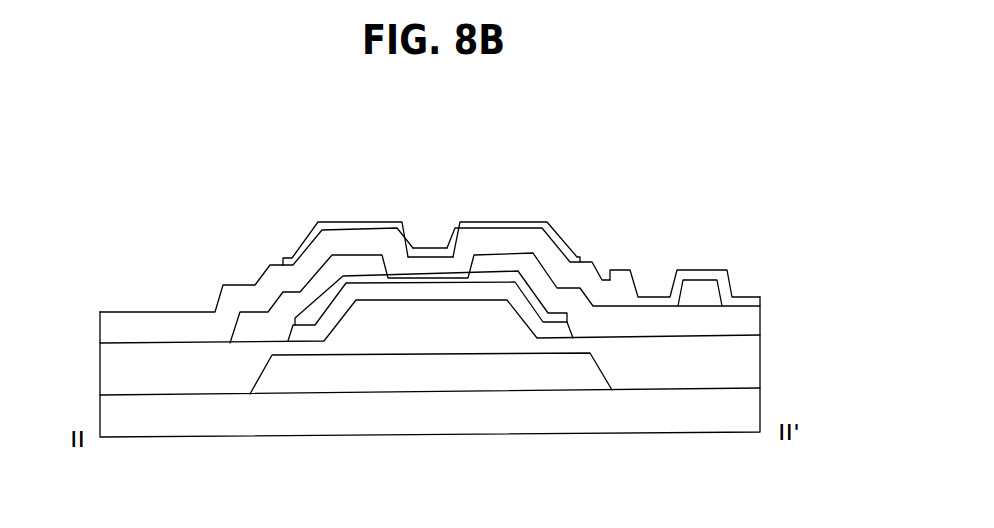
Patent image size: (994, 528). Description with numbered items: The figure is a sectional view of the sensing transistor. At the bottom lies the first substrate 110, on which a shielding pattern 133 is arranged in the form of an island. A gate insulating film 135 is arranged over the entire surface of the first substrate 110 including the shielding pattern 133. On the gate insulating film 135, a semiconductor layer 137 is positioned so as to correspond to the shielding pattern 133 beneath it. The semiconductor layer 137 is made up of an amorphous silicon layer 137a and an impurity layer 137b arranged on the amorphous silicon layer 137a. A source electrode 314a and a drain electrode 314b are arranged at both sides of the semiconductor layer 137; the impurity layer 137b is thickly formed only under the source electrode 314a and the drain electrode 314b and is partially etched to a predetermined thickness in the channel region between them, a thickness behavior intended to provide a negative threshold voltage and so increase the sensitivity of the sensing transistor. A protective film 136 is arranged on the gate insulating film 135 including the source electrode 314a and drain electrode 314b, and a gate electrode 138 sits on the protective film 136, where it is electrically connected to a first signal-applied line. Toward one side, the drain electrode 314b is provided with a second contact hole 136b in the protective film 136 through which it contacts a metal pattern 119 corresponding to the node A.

The first substrate 110 is at (757, 407).
The shielding pattern 133 is at (432, 375).
The gate insulating film 135 is at (757, 368).
The protective film 136 is at (757, 318).
The second contact hole 136b is at (654, 297).
The semiconductor layer 137 is at (210, 205).
The amorphous silicon layer 137a is at (328, 310).
The impurity layer 137b is at (342, 303).
The gate electrode 138 is at (403, 220).
The source electrode 314a is at (362, 260).
The drain electrode 314b is at (506, 256).
The metal pattern 119 is at (717, 278).